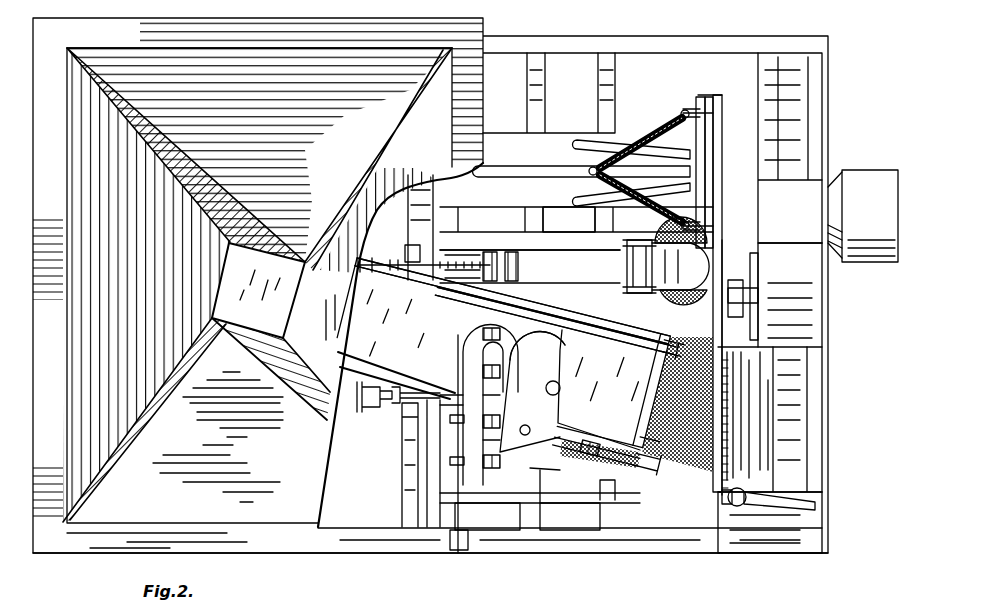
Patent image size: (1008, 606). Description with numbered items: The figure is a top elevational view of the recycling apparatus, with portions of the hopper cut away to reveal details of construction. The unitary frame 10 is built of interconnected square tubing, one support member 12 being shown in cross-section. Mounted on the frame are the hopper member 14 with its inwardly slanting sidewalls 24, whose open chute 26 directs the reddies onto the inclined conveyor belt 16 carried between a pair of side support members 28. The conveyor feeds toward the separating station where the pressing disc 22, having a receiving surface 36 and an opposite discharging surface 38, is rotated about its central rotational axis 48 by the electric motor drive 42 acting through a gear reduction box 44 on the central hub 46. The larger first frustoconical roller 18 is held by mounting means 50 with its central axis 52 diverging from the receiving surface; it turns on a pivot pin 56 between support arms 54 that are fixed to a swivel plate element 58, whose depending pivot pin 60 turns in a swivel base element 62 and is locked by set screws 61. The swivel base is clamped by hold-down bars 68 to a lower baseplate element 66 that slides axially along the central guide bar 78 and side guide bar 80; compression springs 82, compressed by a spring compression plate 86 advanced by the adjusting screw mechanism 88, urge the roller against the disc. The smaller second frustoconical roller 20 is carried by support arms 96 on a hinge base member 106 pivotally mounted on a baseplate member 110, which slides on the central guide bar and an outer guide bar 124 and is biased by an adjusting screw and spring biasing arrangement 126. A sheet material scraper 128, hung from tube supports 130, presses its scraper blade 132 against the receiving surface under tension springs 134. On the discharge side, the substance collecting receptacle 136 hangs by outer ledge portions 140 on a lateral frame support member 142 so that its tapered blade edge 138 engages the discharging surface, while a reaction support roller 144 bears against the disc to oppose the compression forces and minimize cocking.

The unitary frame 10 is at (830, 68).
The square tubing support member 12 is at (462, 552).
The hopper member 14 is at (122, 506).
The conveyor belt 16 is at (432, 334).
The first frustoconical roller 18 is at (702, 482).
The second frustoconical roller 20 is at (690, 296).
The pressing disc 22 is at (720, 222).
The inwardly slanting sidewalls 24 is at (308, 70).
The open chute 26 is at (234, 284).
The side support members 28 is at (388, 285).
The receiving surface 36 is at (711, 170).
The discharging surface 38 is at (718, 130).
The electric motor drive 42 is at (877, 170).
The gear reduction box 44 is at (829, 326).
The central hub 46 is at (742, 318).
The central rotational axis 48 is at (762, 300).
The mounting means 50 is at (453, 444).
The central axis of roller 52 is at (656, 425).
The support arms 54 is at (620, 330).
The pivot pin 56 is at (622, 478).
The swivel plate element 58 is at (568, 400).
The depending pivot pin 60 is at (558, 384).
The set screws 61 is at (525, 426).
The swivel base element 62 is at (560, 503).
The lower baseplate element 66 is at (570, 468).
The hold-down bars 68 is at (558, 340).
The central guide bar 78 is at (525, 292).
The side guide bar 80 is at (478, 510).
The compression springs 82 is at (470, 330).
The spring compression plate 86 is at (462, 362).
The adjusting screw mechanism 88 is at (390, 410).
The support arms 96 is at (664, 242).
The hinge base member 106 is at (627, 272).
The baseplate member 110 is at (565, 250).
The outer guide bar 124 is at (490, 228).
The adjusting screw and spring biasing arrangement 126 is at (421, 245).
The sheet material scraper 128 is at (686, 110).
The tube supports 130 is at (562, 158).
The scraper blade 132 is at (715, 98).
The tension springs 134 is at (642, 135).
The substance collecting receptacle 136 is at (760, 414).
The tapered blade edge 138 is at (728, 450).
The outer ledge portions 140 is at (790, 492).
The lateral frame support member 142 is at (820, 418).
The reaction support roller 144 is at (742, 506).